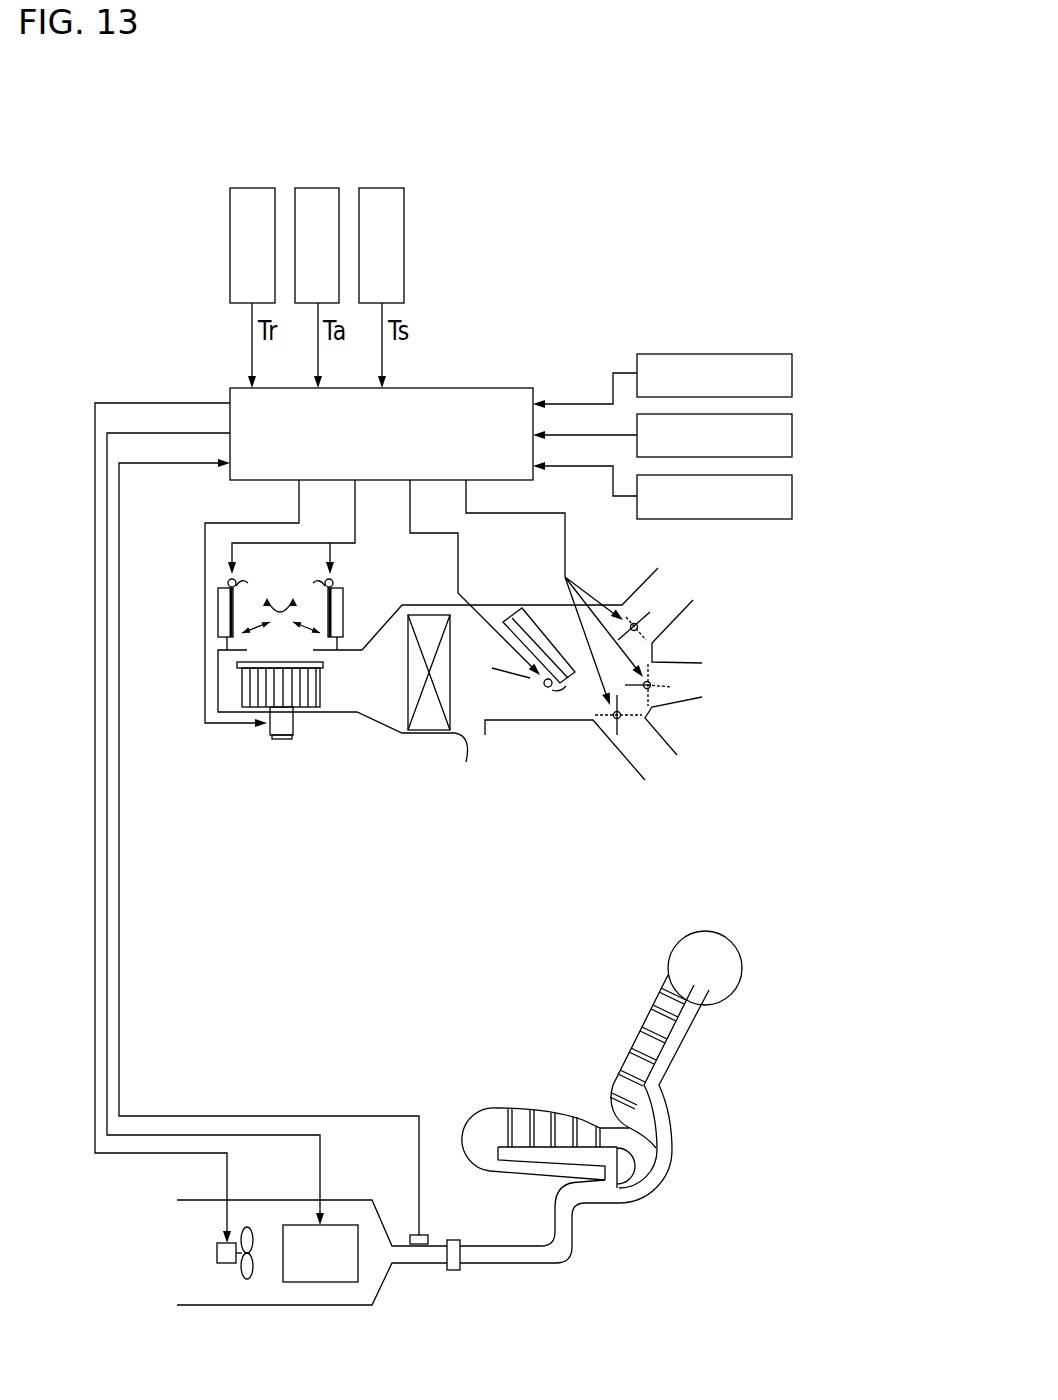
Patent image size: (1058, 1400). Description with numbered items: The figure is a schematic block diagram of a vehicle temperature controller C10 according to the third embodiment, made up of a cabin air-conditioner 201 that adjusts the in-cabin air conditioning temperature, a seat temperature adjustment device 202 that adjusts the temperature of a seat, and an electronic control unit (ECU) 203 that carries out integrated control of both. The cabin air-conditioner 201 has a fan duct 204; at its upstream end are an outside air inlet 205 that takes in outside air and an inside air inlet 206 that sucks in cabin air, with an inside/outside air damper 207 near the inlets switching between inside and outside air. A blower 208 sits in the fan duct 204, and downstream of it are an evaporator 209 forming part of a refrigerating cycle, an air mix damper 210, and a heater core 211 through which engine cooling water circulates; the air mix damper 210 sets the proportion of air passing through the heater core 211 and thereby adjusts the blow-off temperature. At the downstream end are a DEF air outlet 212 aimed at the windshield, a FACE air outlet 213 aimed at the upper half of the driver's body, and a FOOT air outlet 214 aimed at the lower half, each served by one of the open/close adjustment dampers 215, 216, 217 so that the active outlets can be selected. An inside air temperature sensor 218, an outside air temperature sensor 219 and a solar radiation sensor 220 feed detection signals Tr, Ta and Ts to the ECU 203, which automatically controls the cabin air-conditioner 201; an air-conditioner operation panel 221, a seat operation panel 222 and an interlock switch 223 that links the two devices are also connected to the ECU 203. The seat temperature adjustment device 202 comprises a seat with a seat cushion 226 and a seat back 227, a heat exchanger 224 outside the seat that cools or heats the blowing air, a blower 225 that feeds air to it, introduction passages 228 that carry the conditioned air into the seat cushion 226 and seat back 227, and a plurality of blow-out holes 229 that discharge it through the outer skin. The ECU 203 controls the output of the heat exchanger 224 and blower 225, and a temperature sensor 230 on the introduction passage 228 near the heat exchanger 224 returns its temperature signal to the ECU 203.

The cabin air-conditioner 201 is at (470, 650).
The seat temperature adjustment device 202 is at (629, 1097).
The electronic control unit (ECU) 203 is at (475, 388).
The fan duct 204 is at (374, 722).
The outside air inlet 205 is at (303, 592).
The inside air inlet 206 is at (218, 607).
The inside/outside air damper 207 is at (228, 620).
The blower 208 is at (257, 688).
The evaporator 209 is at (428, 732).
The air mix damper 210 is at (492, 670).
The heater core 211 is at (562, 689).
The DEF air outlet 212 is at (685, 618).
The FACE air outlet 213 is at (692, 662).
The FOOT air outlet 214 is at (674, 742).
The open/close adjustment damper 215 is at (654, 610).
The open/close adjustment damper 216 is at (674, 687).
The open/close adjustment damper 217 is at (627, 734).
The inside air temperature sensor 218 is at (254, 188).
The outside air temperature sensor 219 is at (320, 188).
The solar radiation sensor 220 is at (384, 188).
The air-conditioner operation panel 221 is at (792, 375).
The seat operation panel 222 is at (792, 435).
The interlock switch 223 is at (792, 497).
The heat exchanger 224 is at (322, 1283).
The blower 225 is at (228, 1268).
The seat cushion 226 is at (485, 1113).
The seat back 227 is at (733, 993).
The introduction passages 228 is at (612, 1165).
The blow-out holes 229 is at (647, 1032).
The temperature sensor 230 is at (419, 1248).
The vehicle temperature controller C10 is at (820, 818).